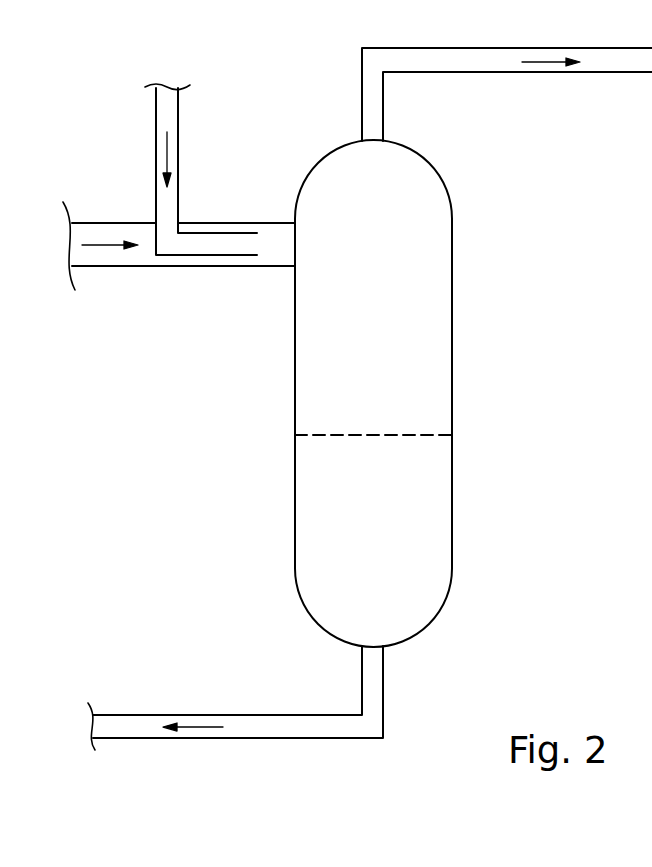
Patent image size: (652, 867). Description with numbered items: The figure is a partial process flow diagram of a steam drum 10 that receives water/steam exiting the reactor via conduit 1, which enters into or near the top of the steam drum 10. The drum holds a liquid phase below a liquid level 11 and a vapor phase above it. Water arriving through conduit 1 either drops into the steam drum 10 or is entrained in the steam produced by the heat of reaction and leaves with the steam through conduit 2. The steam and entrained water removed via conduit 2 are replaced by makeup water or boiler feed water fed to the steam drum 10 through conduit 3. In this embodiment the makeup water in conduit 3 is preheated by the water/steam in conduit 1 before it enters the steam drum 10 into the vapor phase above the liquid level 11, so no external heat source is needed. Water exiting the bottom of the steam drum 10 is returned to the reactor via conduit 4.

The conduit 1 is at (105, 285).
The conduit 2 is at (545, 110).
The conduit 3 is at (202, 134).
The conduit 4 is at (176, 677).
The steam drum 10 is at (489, 330).
The liquid level 11 is at (417, 435).